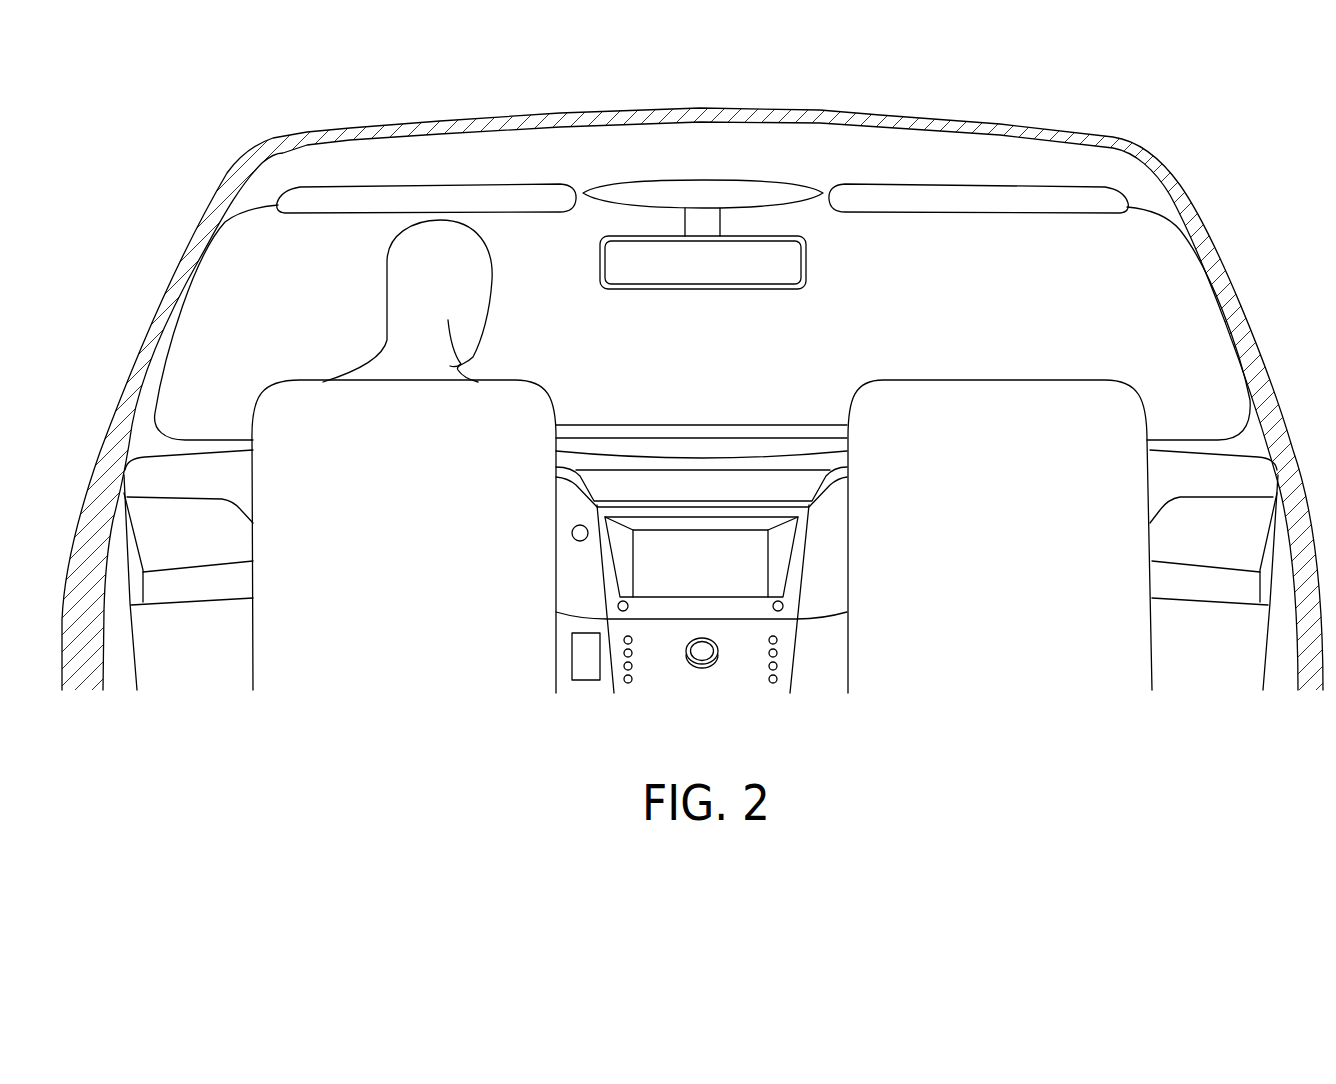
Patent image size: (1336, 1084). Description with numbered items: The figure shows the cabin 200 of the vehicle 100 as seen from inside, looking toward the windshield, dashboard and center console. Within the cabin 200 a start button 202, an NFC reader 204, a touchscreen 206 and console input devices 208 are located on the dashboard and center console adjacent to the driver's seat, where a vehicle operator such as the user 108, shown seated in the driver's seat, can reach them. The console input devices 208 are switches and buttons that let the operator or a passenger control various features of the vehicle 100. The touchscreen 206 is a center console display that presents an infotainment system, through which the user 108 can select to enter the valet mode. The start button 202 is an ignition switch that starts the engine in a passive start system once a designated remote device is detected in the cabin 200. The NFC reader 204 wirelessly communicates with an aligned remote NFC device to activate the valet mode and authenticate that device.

The vehicle 100 is at (1115, 137).
The user 108 is at (384, 287).
The cabin 200 is at (925, 150).
The start button 202 is at (572, 534).
The NFC reader 204 is at (572, 657).
The touchscreen 206 is at (722, 570).
The console input devices 208 is at (753, 697).